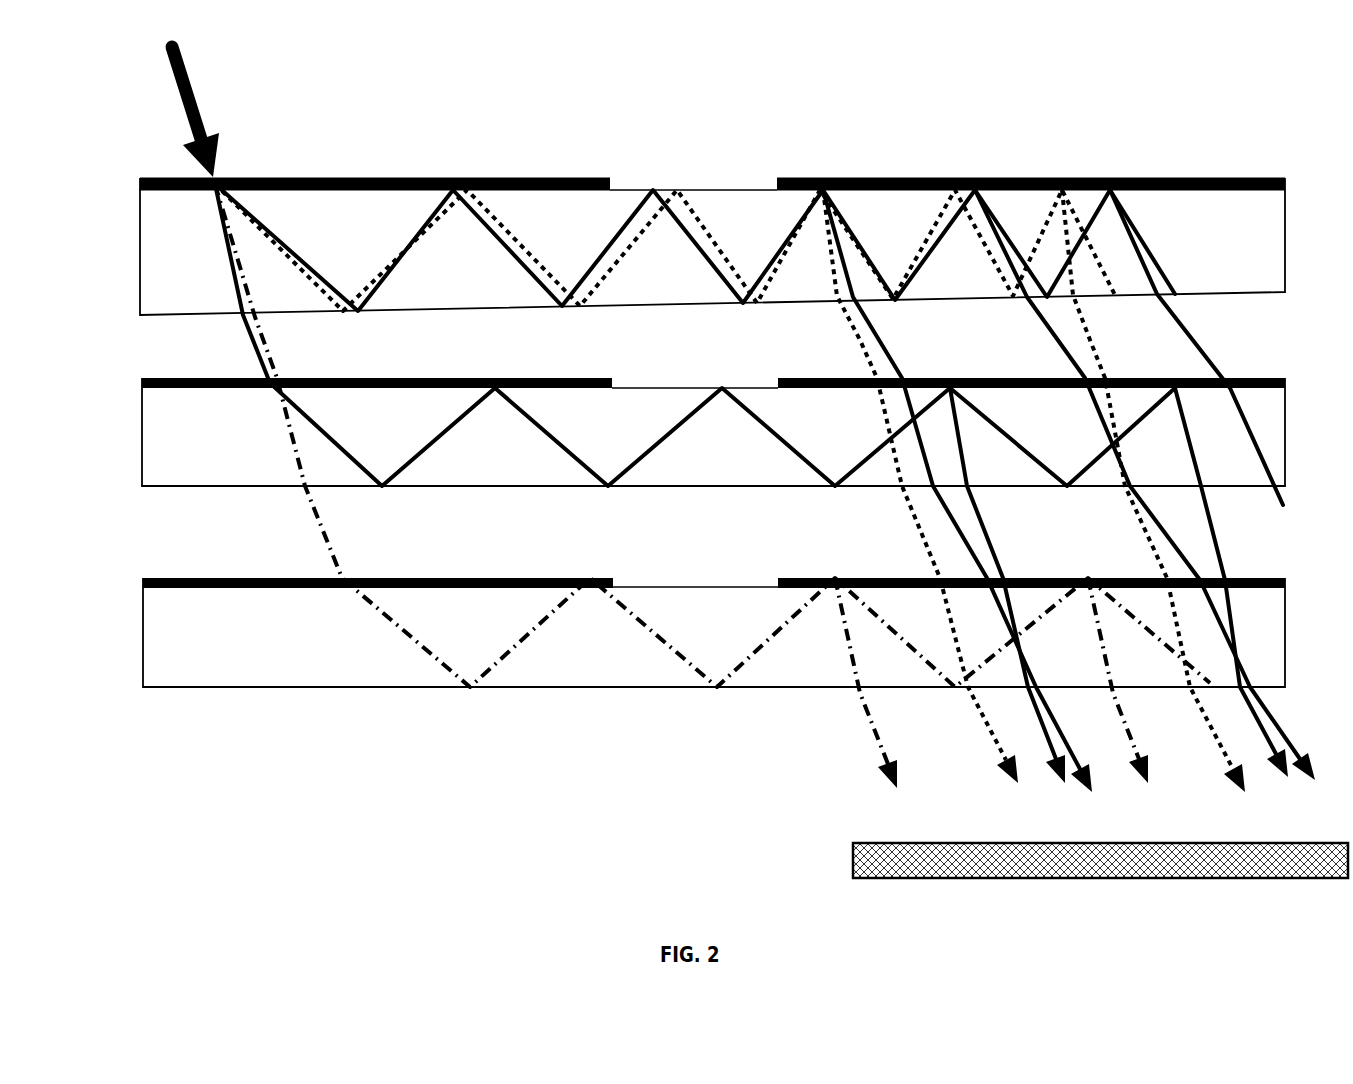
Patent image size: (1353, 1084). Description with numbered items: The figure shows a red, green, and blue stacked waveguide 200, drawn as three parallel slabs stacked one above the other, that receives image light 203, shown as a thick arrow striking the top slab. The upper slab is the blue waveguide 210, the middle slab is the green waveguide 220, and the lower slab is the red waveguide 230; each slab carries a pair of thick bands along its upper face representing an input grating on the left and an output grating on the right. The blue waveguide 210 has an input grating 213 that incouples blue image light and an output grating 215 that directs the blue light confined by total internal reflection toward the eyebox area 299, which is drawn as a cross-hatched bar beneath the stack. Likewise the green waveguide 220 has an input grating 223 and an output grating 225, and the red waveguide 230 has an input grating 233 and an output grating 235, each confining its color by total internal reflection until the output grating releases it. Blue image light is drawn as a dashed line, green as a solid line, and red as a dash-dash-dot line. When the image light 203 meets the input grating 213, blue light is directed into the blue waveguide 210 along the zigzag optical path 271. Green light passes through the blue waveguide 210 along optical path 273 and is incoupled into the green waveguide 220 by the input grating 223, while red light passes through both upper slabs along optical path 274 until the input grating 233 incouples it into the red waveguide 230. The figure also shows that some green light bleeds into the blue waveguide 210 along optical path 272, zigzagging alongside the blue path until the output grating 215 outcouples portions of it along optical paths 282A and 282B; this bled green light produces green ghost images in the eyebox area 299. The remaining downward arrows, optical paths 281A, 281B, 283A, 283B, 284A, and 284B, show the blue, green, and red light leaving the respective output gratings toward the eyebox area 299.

The RGB stacked waveguide 200 is at (1250, 126).
The image light 203 is at (162, 112).
The blue waveguide 210 is at (103, 253).
The input grating 213 is at (375, 162).
The output grating 215 is at (1031, 161).
The green waveguide 220 is at (112, 431).
The input grating 223 is at (377, 359).
The output grating 225 is at (1031, 357).
The red waveguide 230 is at (118, 624).
The input grating 233 is at (378, 558).
The output grating 235 is at (1031, 558).
The optical path 271 is at (665, 269).
The optical path 272 is at (695, 247).
The optical path 273 is at (680, 335).
The optical path 274 is at (712, 435).
The first out-coupled light ray A 281A is at (920, 486).
The first out-coupled light ray B 281B is at (1153, 491).
The optical path 282A is at (991, 511).
The optical path 282B is at (1150, 517).
The third out-coupled light ray A 283A is at (1007, 604).
The third out-coupled light ray B 283B is at (1231, 608).
The fourth out-coupled light ray A 284A is at (842, 683).
The fourth out-coupled light ray B 284B is at (1141, 680).
The eyebox area 299 is at (1063, 858).